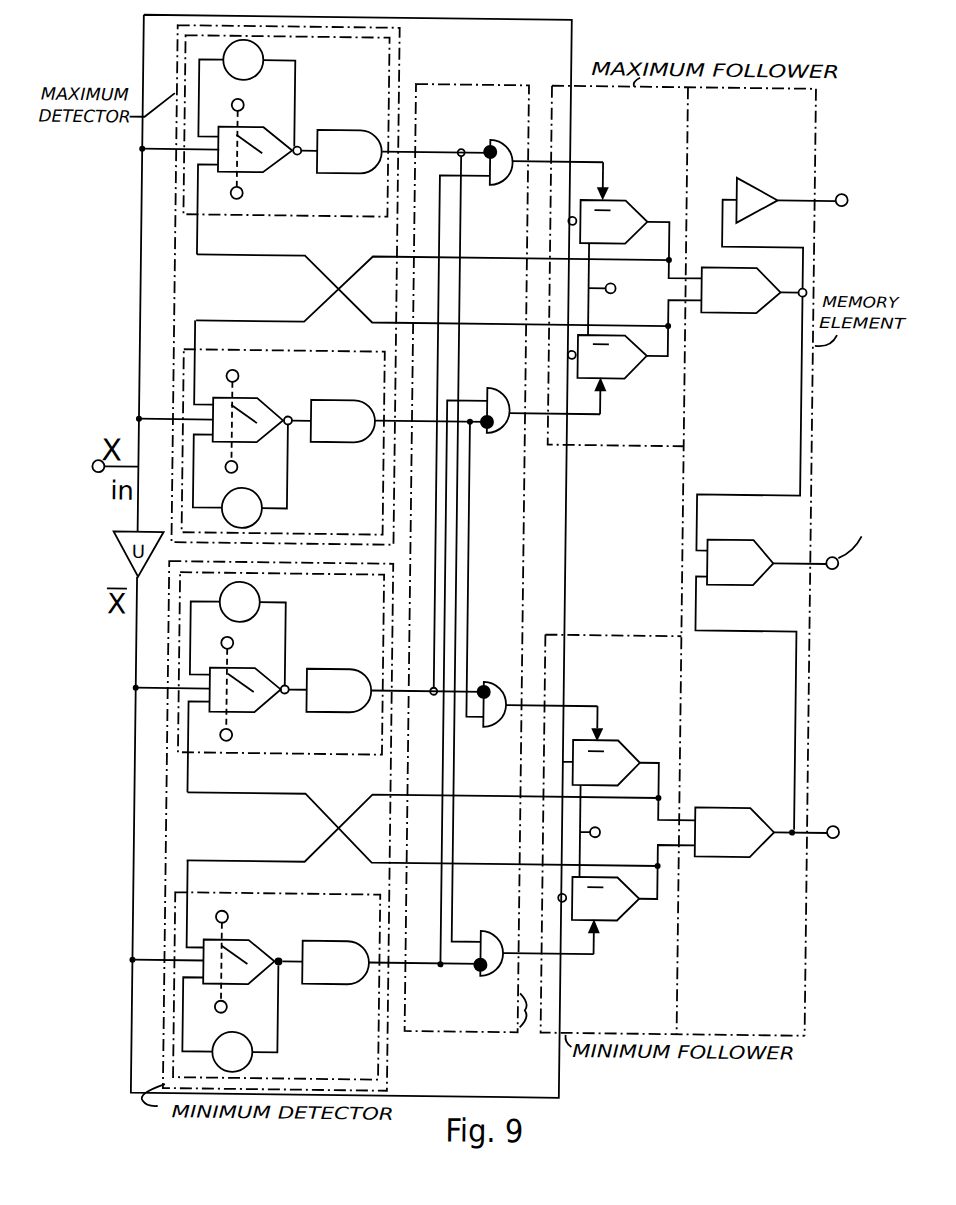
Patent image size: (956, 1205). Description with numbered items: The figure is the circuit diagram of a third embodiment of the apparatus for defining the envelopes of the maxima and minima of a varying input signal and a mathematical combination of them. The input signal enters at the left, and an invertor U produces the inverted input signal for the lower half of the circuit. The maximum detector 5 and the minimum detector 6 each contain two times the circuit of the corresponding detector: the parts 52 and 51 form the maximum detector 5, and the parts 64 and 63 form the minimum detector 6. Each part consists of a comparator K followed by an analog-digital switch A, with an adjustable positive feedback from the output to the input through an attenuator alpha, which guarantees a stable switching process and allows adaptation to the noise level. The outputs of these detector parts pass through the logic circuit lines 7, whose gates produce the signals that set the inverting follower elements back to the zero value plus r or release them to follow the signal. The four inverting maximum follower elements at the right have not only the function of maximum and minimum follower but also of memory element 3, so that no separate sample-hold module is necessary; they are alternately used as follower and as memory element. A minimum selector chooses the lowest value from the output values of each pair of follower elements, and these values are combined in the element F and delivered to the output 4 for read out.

The maximum detector part 52 is at (316, 146).
The maximum detector part 51 is at (313, 428).
The minimum detector part 64 is at (309, 684).
The minimum detector part 63 is at (306, 970).
The maximum detector 5 is at (432, 278).
The minimum detector 6 is at (423, 815).
The logic circuit lines 7 is at (504, 581).
The memory element 3 is at (771, 462).
The output 4 is at (832, 534).